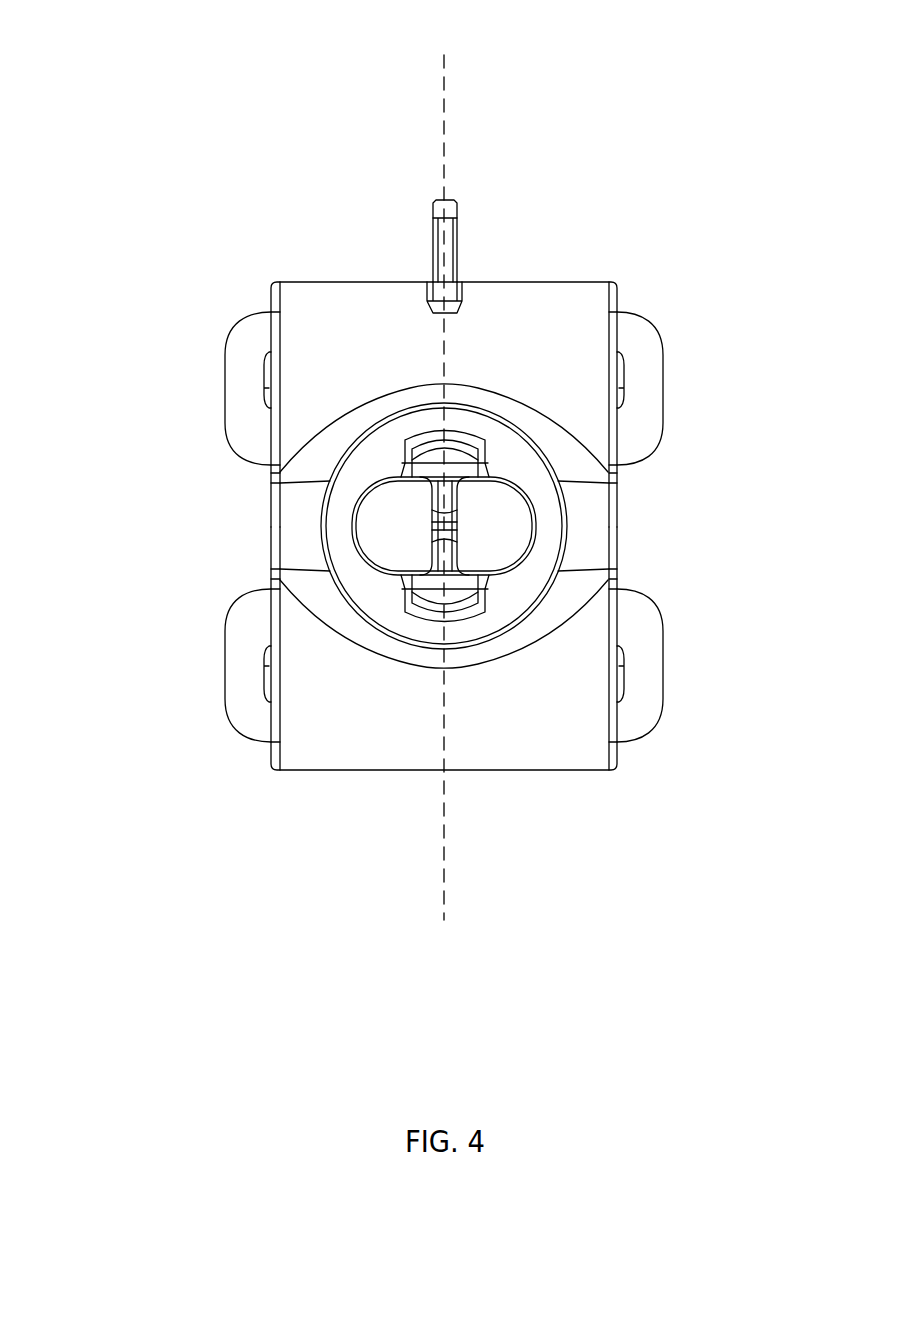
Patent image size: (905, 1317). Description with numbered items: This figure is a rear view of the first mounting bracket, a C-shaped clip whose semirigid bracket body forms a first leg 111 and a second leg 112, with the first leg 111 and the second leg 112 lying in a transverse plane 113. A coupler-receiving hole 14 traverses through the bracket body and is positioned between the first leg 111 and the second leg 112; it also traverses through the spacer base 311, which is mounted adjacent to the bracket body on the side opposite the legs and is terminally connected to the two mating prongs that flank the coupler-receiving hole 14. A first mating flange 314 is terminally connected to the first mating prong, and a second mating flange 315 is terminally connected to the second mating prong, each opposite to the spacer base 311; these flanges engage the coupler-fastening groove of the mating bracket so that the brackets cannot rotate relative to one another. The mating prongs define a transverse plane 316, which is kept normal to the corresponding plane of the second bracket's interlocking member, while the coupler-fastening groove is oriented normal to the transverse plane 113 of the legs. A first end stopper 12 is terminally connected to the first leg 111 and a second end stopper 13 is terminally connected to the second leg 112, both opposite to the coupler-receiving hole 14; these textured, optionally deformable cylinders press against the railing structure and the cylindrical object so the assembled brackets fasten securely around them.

The first leg 111 is at (333, 297).
The second leg 112 is at (546, 760).
The transverse plane 113 is at (502, 160).
The transverse plane 316 is at (452, 137).
The first end stopper 12 is at (638, 338).
The second end stopper 13 is at (657, 700).
The coupler-receiving hole 14 is at (497, 534).
The spacer base 311 is at (337, 547).
The first mating flange 314 is at (463, 437).
The second mating flange 315 is at (423, 613).